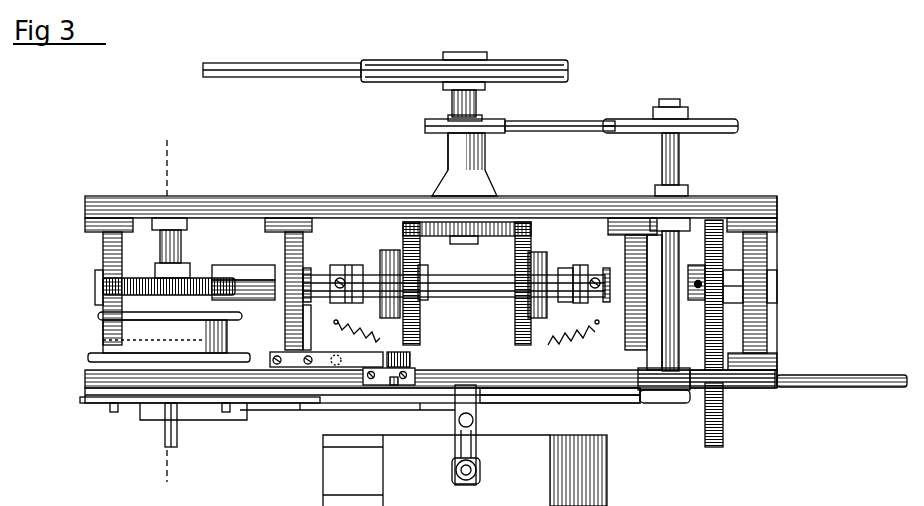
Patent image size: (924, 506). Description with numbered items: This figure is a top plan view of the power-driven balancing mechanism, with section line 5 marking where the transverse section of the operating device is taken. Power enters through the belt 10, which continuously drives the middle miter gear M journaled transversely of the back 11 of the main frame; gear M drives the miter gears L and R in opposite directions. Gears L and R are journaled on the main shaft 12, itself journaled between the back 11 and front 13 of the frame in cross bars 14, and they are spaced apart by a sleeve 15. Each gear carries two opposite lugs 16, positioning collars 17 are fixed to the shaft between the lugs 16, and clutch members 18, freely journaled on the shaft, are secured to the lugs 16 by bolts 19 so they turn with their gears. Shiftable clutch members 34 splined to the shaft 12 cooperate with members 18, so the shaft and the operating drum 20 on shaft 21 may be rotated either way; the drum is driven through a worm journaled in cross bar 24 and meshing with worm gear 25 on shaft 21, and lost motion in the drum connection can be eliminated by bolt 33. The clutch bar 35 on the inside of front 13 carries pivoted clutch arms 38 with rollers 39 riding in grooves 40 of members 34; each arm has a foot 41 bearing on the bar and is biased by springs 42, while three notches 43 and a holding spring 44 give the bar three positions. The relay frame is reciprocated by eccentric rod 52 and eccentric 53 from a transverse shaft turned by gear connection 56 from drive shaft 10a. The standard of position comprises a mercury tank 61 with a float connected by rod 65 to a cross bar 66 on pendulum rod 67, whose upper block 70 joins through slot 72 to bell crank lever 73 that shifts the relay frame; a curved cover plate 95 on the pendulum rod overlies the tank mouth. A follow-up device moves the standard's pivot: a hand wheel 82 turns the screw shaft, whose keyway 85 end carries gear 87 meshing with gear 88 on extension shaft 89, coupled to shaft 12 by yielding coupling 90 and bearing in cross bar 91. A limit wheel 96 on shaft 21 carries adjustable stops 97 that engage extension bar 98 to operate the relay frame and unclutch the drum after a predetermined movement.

The section line 5— 5 is at (165, 310).
The belt 10 is at (268, 72).
The drive shaft 10a is at (478, 108).
The back of main frame 11 is at (372, 205).
The main shaft 12 is at (372, 262).
The front of main frame 13 is at (750, 385).
The cross bars 14 is at (305, 238).
The sleeve 15 is at (468, 280).
The lugs 16 is at (395, 240).
The positioning collars 17 is at (420, 265).
The clutch members 18 is at (565, 268).
The bolts 19 is at (540, 250).
The operating drum 20 is at (169, 337).
The drum shaft 21 is at (182, 246).
The cross bar 24 is at (103, 255).
The worm gear 25 is at (100, 288).
The bolt 33 is at (243, 282).
The clutch members 34 is at (343, 262).
The clutch bar 35 is at (468, 368).
The clutch arms 38 is at (330, 338).
The rollers 39 is at (340, 290).
The grooves 40 is at (315, 258).
The foot 41 is at (280, 346).
The springs 42 is at (568, 331).
The notches 43 is at (410, 360).
The holding spring 44 is at (321, 361).
The eccentric rod 52 is at (618, 403).
The eccentric 53 is at (680, 345).
The gear connection 56 is at (615, 120).
The tank 61 is at (590, 482).
The float rod 65 is at (480, 472).
The cross bar 66 is at (476, 447).
The pendulum rod 67 is at (473, 420).
The block 70 is at (455, 423).
The slot 72 is at (530, 403).
The bell crank lever 73 is at (400, 405).
The hand wheel 82 is at (176, 447).
The keyway 85 is at (842, 368).
The gear 87 is at (725, 440).
The gear 88 is at (723, 325).
The extension shaft 89 is at (733, 275).
The yielding shock absorbing coupling 90 is at (693, 266).
The cross bar 91 is at (755, 310).
The cover plate 95 is at (436, 470).
The limit wheel 96 is at (165, 405).
The limit stops 97 is at (114, 412).
The extension bar 98 is at (222, 420).
The miter gear L is at (442, 315).
The miter gear M is at (487, 243).
The miter gear R is at (493, 313).